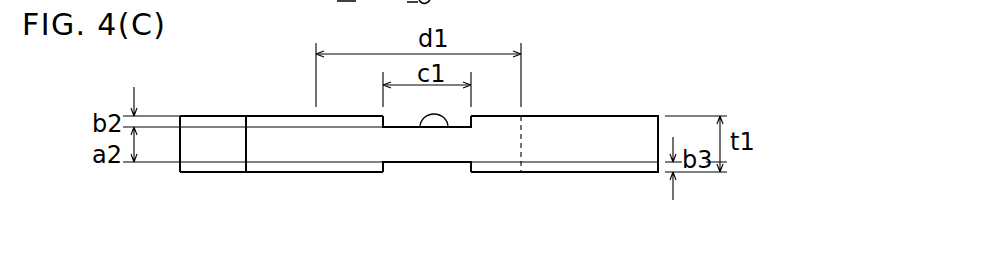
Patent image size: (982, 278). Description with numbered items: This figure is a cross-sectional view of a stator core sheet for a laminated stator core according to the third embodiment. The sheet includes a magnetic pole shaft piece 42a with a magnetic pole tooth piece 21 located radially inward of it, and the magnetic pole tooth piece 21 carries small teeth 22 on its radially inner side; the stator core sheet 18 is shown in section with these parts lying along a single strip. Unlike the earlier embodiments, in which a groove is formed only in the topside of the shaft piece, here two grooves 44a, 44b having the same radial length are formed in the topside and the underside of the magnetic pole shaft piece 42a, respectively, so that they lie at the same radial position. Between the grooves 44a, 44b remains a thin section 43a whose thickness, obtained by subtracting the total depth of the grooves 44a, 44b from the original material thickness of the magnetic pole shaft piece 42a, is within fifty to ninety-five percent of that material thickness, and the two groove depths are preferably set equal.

The light guide plate 18 is at (618, 123).
The magnetic pole tooth piece 21 is at (223, 183).
The small teeth 22 is at (221, 115).
The magnetic pole shaft piece 42a is at (343, 143).
The thin section 43a is at (404, 143).
The groove 44a is at (448, 127).
The groove 44b is at (439, 162).